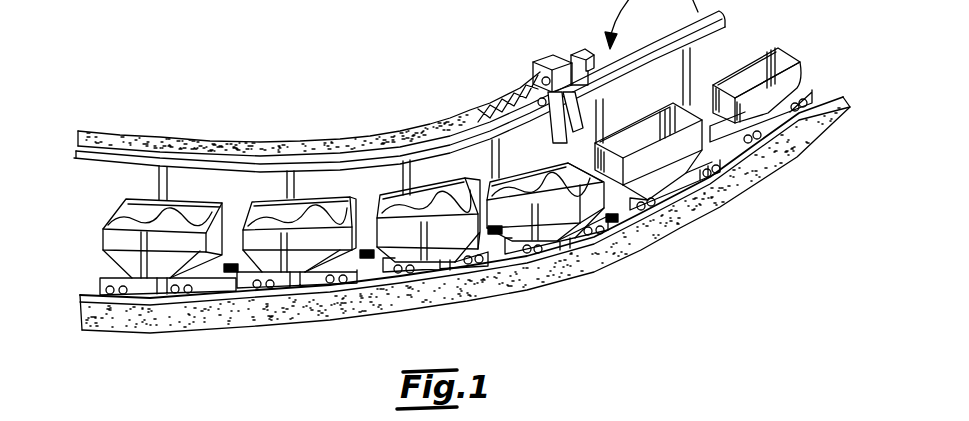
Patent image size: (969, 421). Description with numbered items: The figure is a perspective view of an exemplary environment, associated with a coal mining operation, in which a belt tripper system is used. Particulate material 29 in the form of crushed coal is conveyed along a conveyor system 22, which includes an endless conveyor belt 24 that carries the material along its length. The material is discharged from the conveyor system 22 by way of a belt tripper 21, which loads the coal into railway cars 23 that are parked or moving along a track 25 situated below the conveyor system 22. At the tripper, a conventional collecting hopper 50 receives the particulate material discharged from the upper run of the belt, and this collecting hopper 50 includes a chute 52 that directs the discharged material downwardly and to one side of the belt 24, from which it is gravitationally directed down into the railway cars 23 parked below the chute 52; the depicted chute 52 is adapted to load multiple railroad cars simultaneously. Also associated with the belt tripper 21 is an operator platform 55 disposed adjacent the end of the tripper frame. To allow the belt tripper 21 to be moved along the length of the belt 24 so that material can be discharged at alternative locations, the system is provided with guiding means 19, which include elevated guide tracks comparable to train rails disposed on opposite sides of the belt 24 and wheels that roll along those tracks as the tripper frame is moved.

The guiding means 19 is at (124, 170).
The belt tripper 21 is at (493, 110).
The conveyor system 22 is at (638, 50).
The railway cars 23 is at (657, 110).
The conveyor belt 24 is at (240, 142).
The track 25 is at (831, 89).
The particulate material 29 is at (132, 138).
The collecting hopper 50 is at (543, 55).
The chute 52 is at (573, 115).
The operator platform 55 is at (580, 50).